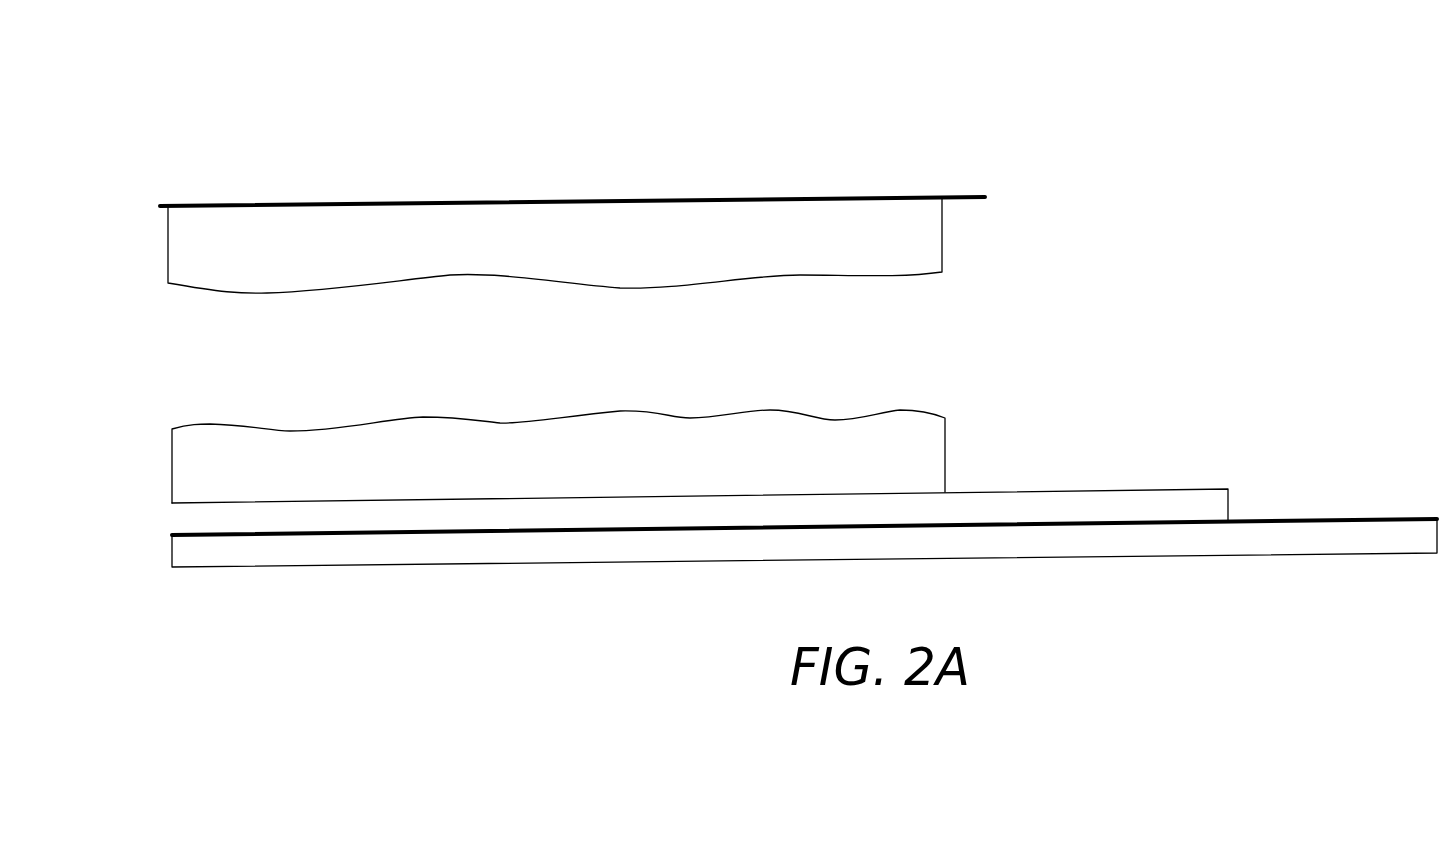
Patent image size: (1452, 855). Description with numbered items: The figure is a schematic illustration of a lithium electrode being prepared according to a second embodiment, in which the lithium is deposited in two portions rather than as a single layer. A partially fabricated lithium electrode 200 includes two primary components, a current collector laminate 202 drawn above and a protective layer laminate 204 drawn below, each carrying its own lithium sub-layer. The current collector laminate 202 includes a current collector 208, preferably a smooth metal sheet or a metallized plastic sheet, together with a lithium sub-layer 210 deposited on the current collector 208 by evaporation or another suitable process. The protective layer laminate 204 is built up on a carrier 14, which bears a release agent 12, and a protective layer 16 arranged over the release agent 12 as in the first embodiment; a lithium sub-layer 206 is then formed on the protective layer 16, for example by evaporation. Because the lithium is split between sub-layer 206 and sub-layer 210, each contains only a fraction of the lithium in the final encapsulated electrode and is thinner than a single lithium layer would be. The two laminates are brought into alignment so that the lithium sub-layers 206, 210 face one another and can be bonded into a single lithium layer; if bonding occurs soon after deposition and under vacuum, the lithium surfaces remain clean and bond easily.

The partially fabricated lithium electrode 200 is at (1027, 139).
The current collector laminate 202 is at (160, 248).
The protective layer laminate 204 is at (163, 480).
The lithium sub-layer 206 is at (935, 460).
The current collector 208 is at (870, 197).
The lithium sub-layer 210 is at (912, 262).
The release agent 12 is at (1288, 518).
The carrier 14 is at (1253, 548).
The protective layer 16 is at (1118, 498).